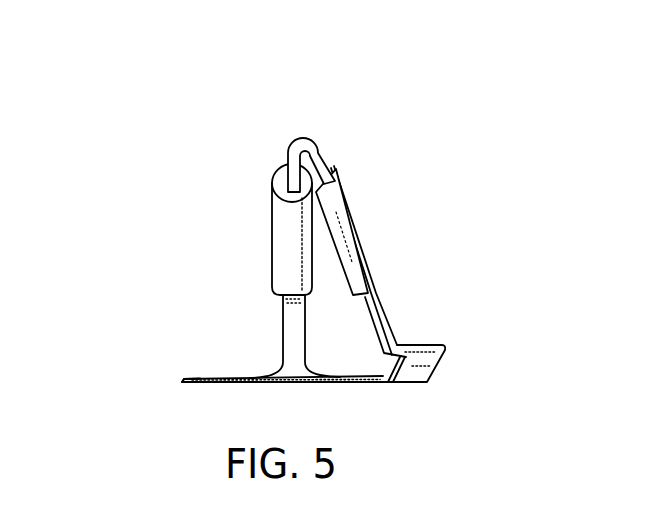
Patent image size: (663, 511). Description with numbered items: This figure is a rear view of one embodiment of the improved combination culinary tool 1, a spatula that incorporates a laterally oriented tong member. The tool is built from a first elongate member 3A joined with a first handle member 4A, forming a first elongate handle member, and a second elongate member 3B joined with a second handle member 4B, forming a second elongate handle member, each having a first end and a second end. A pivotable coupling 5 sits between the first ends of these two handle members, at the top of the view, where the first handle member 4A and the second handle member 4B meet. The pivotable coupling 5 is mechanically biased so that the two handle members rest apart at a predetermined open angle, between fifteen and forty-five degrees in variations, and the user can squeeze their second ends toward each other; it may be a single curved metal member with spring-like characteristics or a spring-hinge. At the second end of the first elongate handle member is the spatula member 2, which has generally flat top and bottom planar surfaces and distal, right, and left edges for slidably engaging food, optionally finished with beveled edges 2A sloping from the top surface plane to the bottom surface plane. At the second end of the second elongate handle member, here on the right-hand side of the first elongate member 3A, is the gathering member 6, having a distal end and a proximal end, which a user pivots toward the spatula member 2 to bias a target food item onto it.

The improved combination culinary tool 1 is at (147, 119).
The spatula member 2 is at (204, 377).
The beveled edges 2A is at (188, 379).
The first elongate member 3A is at (283, 332).
The second elongate member 3B is at (388, 318).
The first handle member 4A is at (281, 228).
The second handle member 4B is at (348, 200).
The pivotable coupling 5 is at (307, 137).
The gathering member 6 is at (440, 360).